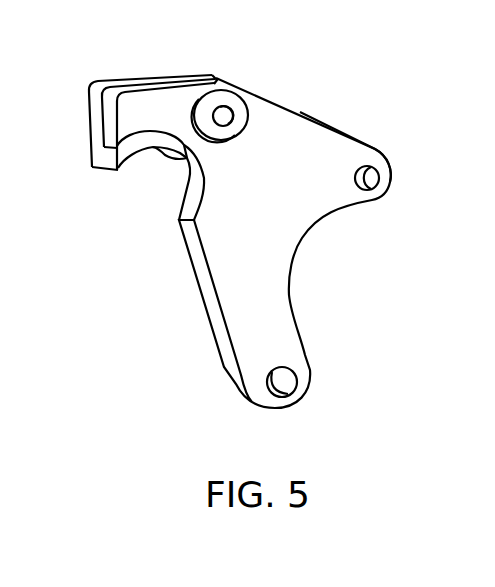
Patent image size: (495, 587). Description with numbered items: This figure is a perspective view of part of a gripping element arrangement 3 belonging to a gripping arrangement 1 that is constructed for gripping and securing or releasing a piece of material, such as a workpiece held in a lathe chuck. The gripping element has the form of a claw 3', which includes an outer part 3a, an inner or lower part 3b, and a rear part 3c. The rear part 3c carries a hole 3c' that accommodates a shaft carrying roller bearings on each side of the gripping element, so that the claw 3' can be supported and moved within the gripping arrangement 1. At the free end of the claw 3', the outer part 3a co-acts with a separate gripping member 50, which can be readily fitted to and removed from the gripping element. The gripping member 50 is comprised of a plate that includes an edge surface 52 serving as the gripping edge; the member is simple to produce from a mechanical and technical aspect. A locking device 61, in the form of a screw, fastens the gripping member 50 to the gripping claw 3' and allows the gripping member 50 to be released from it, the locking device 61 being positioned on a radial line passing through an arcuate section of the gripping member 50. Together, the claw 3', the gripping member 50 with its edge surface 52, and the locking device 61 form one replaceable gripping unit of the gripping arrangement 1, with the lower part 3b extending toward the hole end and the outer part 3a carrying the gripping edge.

The gripping arrangement 1 is at (405, 278).
The gripping element arrangement 3 is at (244, 219).
The claw 3' is at (275, 243).
The outer part 3a is at (90, 97).
The inner or lower part 3b is at (290, 353).
The rear part 3c is at (345, 141).
The hole 3c' is at (394, 174).
The gripping member 50 is at (133, 63).
The edge surface 52 is at (103, 162).
The locking device 61 is at (246, 103).